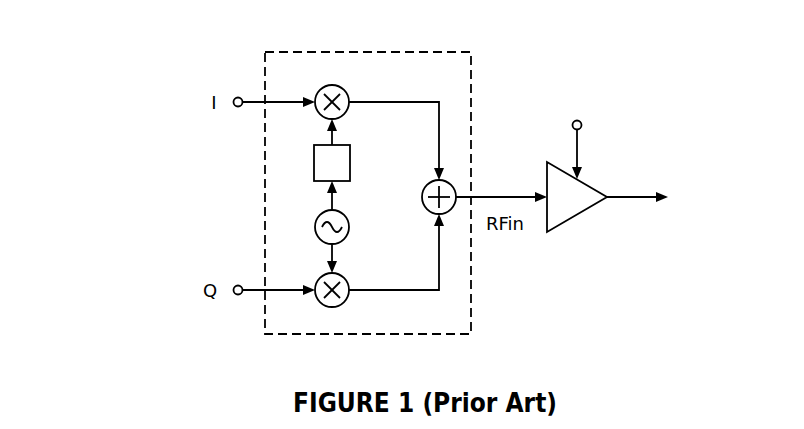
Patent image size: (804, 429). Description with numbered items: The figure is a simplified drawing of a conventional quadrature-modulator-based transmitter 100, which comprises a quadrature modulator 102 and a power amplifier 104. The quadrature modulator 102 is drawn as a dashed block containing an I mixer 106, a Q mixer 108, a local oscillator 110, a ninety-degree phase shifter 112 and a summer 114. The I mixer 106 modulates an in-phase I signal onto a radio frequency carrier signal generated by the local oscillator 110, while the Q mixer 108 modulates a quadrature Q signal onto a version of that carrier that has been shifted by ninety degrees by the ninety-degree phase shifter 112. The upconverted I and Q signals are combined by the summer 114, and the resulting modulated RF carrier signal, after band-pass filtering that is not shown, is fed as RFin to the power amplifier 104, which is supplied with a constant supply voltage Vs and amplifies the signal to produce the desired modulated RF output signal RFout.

The quadrature-modulator-based transmitter 100 is at (90, 311).
The quadrature modulator 102 is at (471, 52).
The power amplifier 104 is at (576, 228).
The I mixer 106 is at (341, 88).
The Q mixer 108 is at (337, 306).
The local oscillator 110 is at (347, 236).
The ninety-degree phase shifter 112 is at (350, 158).
The summer 114 is at (422, 197).